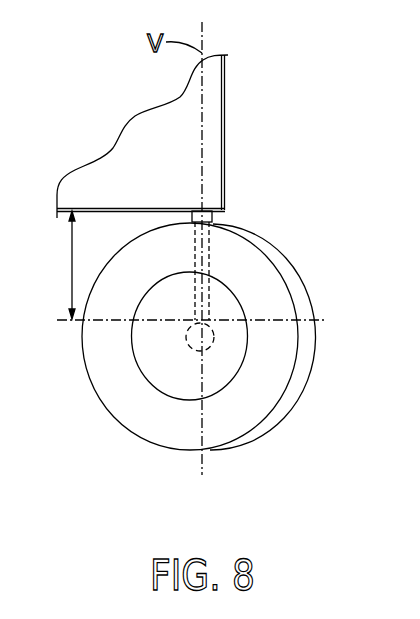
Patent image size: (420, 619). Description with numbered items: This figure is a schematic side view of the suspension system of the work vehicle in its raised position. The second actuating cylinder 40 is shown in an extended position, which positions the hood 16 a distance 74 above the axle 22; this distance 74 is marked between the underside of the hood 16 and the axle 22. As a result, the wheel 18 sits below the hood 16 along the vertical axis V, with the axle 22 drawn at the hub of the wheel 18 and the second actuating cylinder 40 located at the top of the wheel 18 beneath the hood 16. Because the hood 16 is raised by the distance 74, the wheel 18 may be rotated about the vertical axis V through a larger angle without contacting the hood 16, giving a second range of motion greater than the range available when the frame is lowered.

The hood 16 is at (224, 102).
The second actuating cylinder 40 is at (212, 216).
The wheel 18 is at (297, 378).
The axle 22 is at (215, 338).
The distance 74 is at (70, 265).